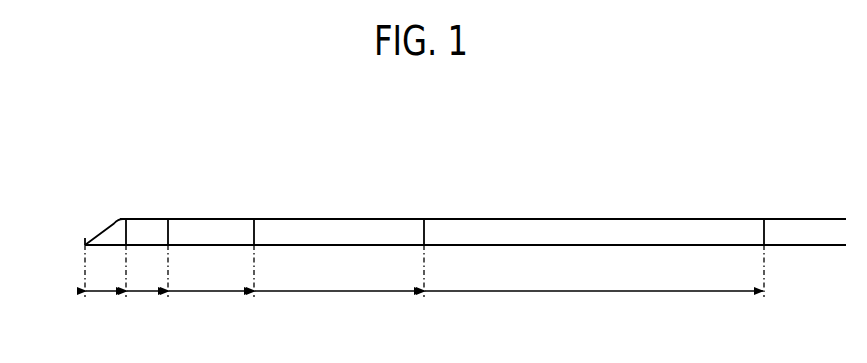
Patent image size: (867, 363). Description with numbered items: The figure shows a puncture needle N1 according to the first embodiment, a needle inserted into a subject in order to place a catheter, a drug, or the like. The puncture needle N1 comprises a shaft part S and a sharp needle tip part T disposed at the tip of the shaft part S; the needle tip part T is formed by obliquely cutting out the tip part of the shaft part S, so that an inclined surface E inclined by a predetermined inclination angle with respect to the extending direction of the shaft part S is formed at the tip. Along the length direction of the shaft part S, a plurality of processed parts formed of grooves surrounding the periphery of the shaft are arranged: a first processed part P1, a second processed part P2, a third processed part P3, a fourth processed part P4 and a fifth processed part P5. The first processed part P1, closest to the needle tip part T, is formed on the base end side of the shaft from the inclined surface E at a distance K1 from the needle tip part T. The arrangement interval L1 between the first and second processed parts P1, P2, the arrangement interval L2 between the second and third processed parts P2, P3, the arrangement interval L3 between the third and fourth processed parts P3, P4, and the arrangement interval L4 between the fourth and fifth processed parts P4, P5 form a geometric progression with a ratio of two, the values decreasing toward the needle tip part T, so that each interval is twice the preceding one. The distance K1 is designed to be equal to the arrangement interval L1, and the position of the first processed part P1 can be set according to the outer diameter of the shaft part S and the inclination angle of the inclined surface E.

The shaft part S is at (641, 233).
The inclined surface E is at (107, 228).
The needle tip part T is at (85, 245).
The puncture needle N1 is at (533, 233).
The first processed part P1 is at (126, 219).
The second processed part P2 is at (168, 219).
The third processed part P3 is at (255, 219).
The fourth processed part P4 is at (424, 219).
The fifth processed part P5 is at (764, 219).
The distance K1 is at (105, 314).
The arrangement interval L1 is at (147, 314).
The arrangement interval L2 is at (211, 314).
The arrangement interval L3 is at (339, 314).
The arrangement interval L4 is at (594, 314).